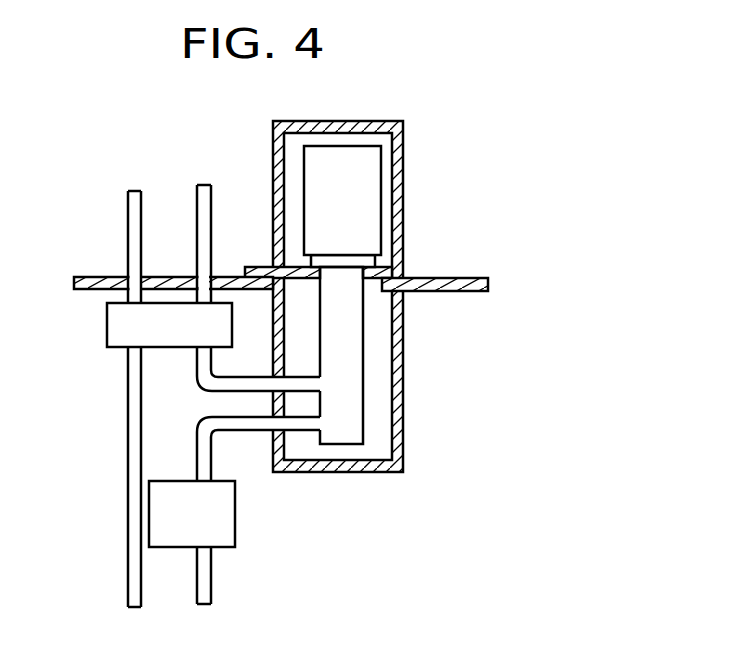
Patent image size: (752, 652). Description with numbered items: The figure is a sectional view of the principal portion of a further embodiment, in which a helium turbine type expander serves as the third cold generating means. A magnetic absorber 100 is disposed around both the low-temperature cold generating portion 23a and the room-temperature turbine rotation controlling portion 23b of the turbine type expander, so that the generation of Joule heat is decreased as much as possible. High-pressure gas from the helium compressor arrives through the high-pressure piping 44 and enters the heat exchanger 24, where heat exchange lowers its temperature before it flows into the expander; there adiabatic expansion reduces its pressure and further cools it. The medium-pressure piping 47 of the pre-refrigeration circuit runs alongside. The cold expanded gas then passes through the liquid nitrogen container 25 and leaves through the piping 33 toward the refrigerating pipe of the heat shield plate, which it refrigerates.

The magnetic absorber 100 is at (392, 124).
The room-temperature turbine rotation controlling portion 23b is at (372, 207).
The low-temperature cold generating portion 23a is at (343, 436).
The heat exchanger 24 is at (112, 330).
The liquid nitrogen container 25 is at (228, 518).
The medium-pressure piping 47 is at (132, 240).
The high-pressure piping 44 is at (210, 188).
The piping 33 is at (203, 578).